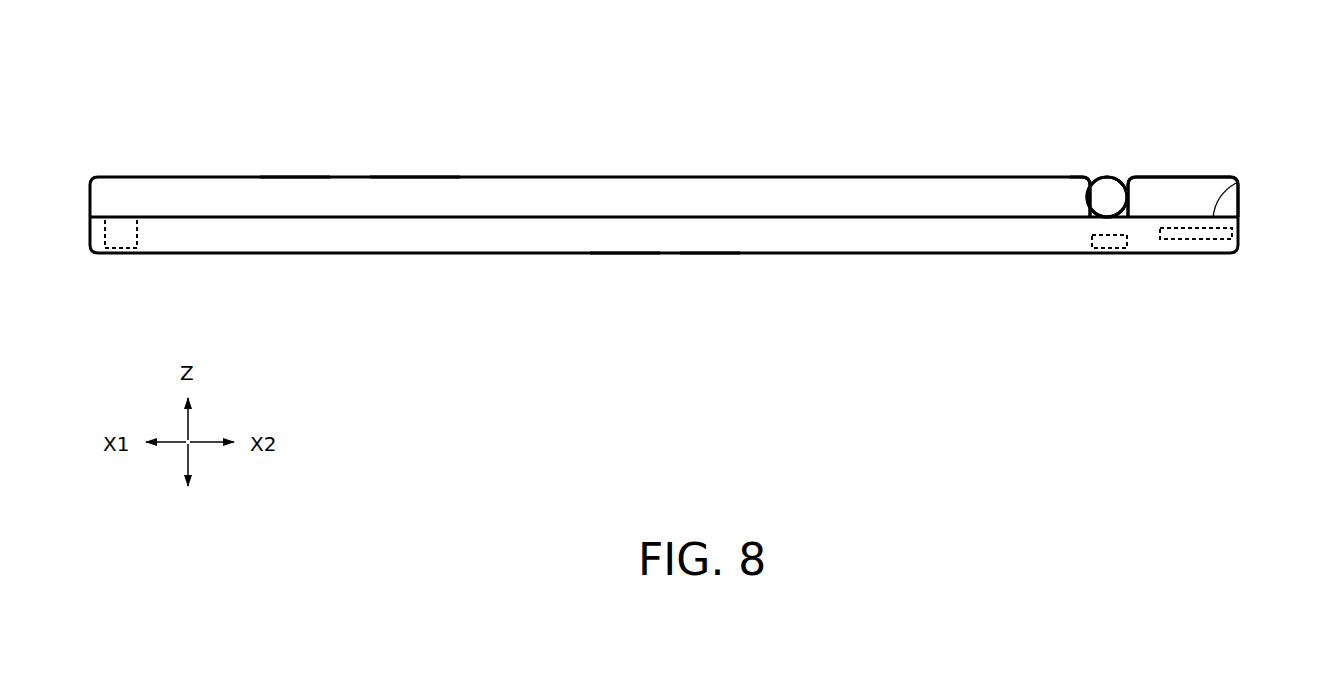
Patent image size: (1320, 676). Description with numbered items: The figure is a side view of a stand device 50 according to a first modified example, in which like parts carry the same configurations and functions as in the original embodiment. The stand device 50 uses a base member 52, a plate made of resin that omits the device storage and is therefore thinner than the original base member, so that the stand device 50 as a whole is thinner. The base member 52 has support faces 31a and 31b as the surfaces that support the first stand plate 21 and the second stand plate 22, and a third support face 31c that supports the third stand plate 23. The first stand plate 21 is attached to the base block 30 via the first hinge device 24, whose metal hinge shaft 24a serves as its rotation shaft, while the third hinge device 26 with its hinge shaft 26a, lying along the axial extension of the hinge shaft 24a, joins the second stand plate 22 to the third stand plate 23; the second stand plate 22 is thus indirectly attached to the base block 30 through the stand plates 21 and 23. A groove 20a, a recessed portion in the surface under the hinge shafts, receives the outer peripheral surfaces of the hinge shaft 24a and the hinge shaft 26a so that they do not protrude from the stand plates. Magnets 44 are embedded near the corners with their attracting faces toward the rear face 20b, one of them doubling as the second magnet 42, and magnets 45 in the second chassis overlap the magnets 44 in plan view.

The stand device 50 is at (183, 80).
The support face 31b is at (302, 146).
The support face 31a is at (291, 177).
The second stand plate 22 is at (419, 146).
The first stand plate 21 is at (404, 173).
The third hinge device 26 is at (1087, 129).
The first hinge device 24 is at (1100, 172).
The hinge shaft 26a is at (1141, 147).
The hinge shaft 24a is at (1101, 207).
The groove 20a is at (1094, 188).
The third stand plate 23 is at (1187, 166).
The base block 30 is at (1179, 173).
The third support face 31c is at (1236, 183).
The second magnet 42 is at (120, 248).
The magnet 44 is at (1190, 239).
The magnet 45 is at (1107, 248).
The base member 52 is at (620, 257).
The rear face 20b is at (707, 256).